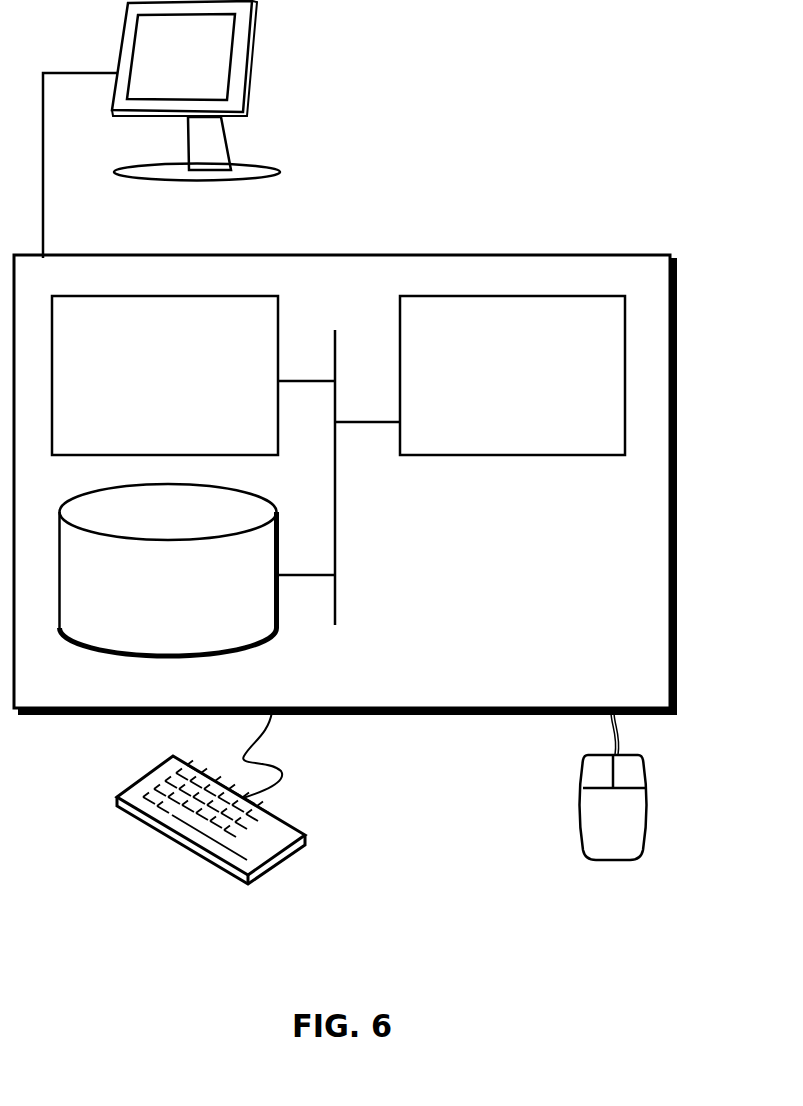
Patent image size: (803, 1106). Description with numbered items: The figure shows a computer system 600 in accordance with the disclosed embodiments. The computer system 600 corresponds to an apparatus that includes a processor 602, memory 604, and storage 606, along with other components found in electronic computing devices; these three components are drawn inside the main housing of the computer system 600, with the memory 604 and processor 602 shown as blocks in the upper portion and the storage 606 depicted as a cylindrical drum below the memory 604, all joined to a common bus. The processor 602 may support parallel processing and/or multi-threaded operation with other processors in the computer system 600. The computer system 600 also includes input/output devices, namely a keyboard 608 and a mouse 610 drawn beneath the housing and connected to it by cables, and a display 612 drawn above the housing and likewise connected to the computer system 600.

The computer system 600 is at (388, 232).
The processor 602 is at (496, 389).
The memory 604 is at (145, 386).
The storage 606 is at (151, 597).
The keyboard 608 is at (137, 812).
The mouse 610 is at (593, 829).
The display 612 is at (196, 104).